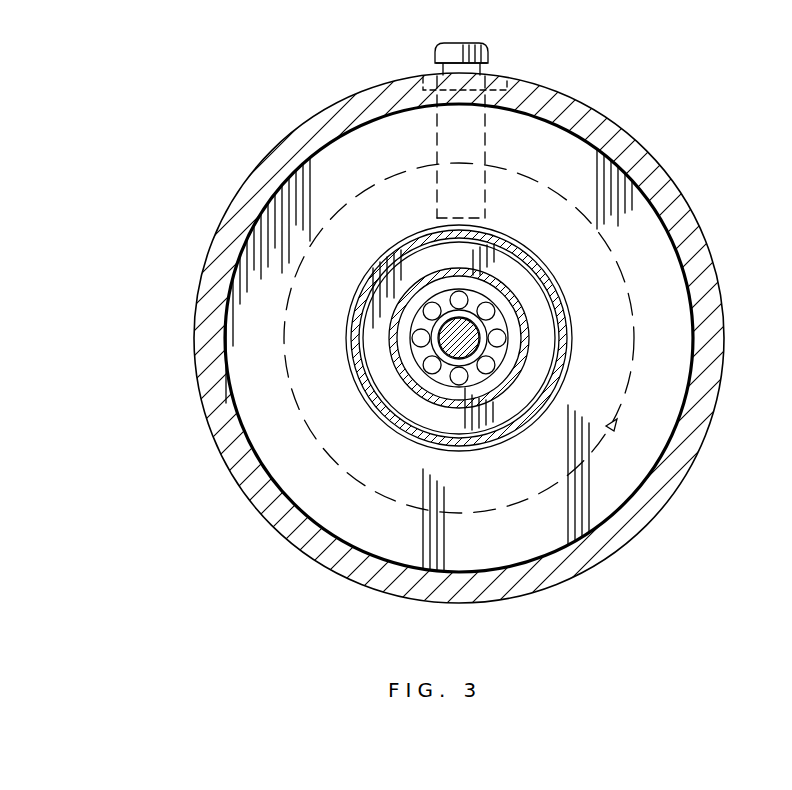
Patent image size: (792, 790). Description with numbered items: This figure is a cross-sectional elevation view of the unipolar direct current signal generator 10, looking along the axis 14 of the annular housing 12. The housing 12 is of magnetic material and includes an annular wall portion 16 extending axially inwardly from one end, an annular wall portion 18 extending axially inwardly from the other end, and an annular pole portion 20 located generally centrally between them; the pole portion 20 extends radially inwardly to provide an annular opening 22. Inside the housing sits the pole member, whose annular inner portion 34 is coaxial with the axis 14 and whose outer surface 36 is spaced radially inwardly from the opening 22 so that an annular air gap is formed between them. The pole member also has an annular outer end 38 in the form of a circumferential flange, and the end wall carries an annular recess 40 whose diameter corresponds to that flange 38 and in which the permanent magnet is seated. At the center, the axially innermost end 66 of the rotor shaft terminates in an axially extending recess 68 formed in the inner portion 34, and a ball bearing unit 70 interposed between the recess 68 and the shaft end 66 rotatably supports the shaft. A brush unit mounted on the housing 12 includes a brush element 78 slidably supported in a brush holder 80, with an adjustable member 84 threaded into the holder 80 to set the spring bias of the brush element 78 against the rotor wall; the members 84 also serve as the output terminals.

The unipolar direct current signal generator 10 is at (646, 97).
The annular housing 12 is at (641, 136).
The annular wall portion 18 is at (698, 251).
The annular pole portion 20 is at (667, 312).
The annular outer end 38 is at (481, 514).
The annular recess 40 is at (614, 430).
The annular wall portion 16 is at (438, 37).
The adjustable member 84 is at (478, 46).
The brush holder 80 is at (436, 145).
The brush element 78 is at (443, 222).
The outer surface 36 is at (505, 425).
The annular opening 22 is at (362, 298).
The annular inner portion 34 is at (410, 393).
The axially extending recess 68 is at (420, 300).
The axially innermost end 66 is at (484, 313).
The ball bearing unit 70 is at (421, 338).
The axis 14 is at (460, 338).